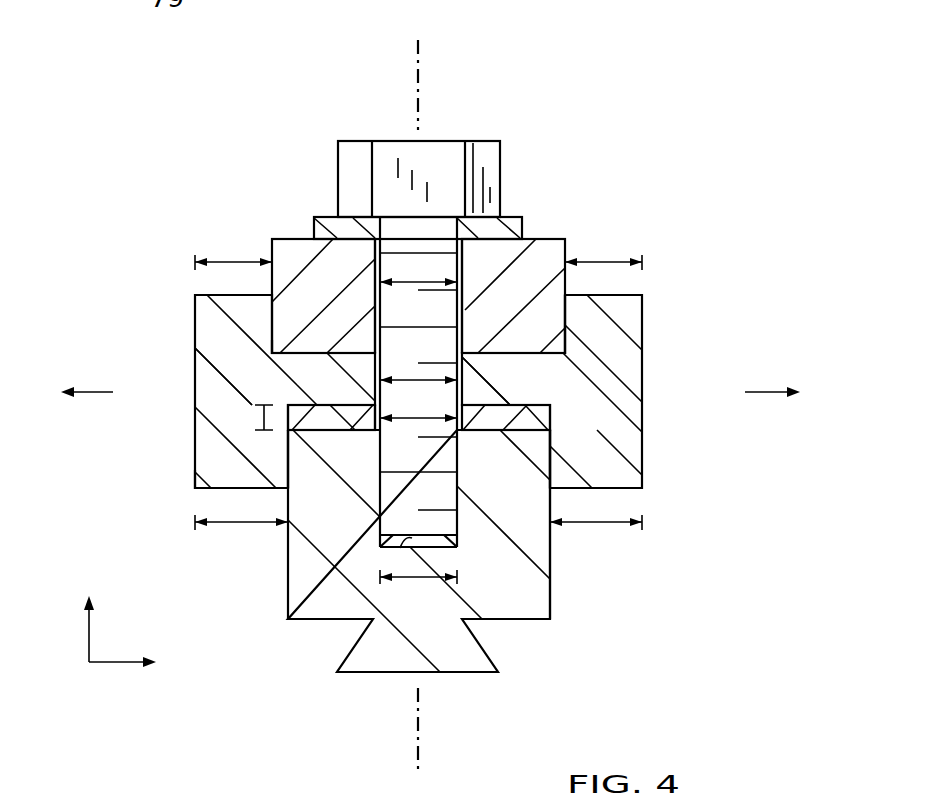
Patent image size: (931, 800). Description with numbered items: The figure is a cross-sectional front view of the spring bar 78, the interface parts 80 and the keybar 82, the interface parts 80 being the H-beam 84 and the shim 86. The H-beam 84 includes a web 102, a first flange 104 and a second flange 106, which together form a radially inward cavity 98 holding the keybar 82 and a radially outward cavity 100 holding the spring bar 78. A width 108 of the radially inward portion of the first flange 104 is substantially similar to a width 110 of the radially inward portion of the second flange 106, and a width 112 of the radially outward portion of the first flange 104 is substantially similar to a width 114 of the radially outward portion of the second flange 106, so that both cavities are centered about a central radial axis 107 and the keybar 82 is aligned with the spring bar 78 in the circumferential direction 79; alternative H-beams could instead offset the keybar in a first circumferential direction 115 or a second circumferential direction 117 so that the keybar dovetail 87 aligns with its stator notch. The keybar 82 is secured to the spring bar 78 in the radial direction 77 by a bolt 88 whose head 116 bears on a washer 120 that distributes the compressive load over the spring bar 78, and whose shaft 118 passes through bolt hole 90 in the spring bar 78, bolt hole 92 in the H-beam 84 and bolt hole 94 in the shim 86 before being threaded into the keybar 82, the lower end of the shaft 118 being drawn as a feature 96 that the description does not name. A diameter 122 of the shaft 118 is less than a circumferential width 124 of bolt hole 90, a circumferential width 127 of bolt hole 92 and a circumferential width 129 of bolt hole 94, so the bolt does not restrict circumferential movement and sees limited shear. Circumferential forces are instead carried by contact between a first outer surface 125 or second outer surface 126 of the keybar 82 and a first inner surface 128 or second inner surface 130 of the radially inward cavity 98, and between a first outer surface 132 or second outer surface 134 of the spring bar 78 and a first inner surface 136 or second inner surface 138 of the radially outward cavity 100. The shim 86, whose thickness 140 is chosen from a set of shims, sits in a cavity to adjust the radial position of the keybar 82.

The radial direction 77 is at (88, 658).
The spring bar 78 is at (560, 239).
The circumferential direction 79 is at (128, 665).
The interface parts 80 is at (118, 456).
The keybar 82 is at (407, 597).
The H-beam 84 is at (194, 490).
The shim 86 is at (306, 435).
The keybar dovetail 87 is at (398, 673).
The bolt 88 is at (418, 401).
The bolt hole in the spring bar 90 is at (465, 336).
The bolt hole in the H-beam 92 is at (419, 419).
The bolt hole in the shim 94 is at (384, 424).
The bolt shank end 96 is at (380, 549).
The radially inward cavity 98 is at (507, 474).
The radially outward cavity 100 is at (246, 423).
The web 102 is at (513, 383).
The first flange 104 is at (593, 407).
The second flange 106 is at (217, 380).
The central radial axis 107 is at (420, 52).
The width of the radially inward portion of the first flange 108 is at (612, 524).
The width of the radially inward portion of the second flange 110 is at (224, 524).
The width of the radially outward portion of the first flange 112 is at (610, 262).
The width of the radially outward portion of the second flange 114 is at (233, 260).
The first circumferential direction 115 is at (745, 392).
The head 116 is at (338, 180).
The second circumferential direction 117 is at (113, 392).
The shaft 118 is at (433, 518).
The washer 120 is at (314, 228).
The diameter of the shaft 122 is at (407, 580).
The circumferential width of the bolt hole in the spring bar 124 is at (379, 281).
The first outer surface of the keybar 125 is at (550, 497).
The second outer surface of the keybar 126 is at (288, 479).
The circumferential width of the bolt hole in the H-beam 127 is at (452, 446).
The first inner surface of the radially inward cavity 128 is at (550, 482).
The circumferential width of the bolt hole in the shim 129 is at (400, 547).
The second inner surface of the radially inward cavity 130 is at (288, 443).
The first outer surface of the spring bar 132 is at (563, 352).
The second outer surface of the spring bar 134 is at (272, 300).
The first inner surface of the radially outward cavity 136 is at (560, 330).
The second inner surface of the radially outward cavity 138 is at (273, 345).
The thickness of the shim 140 is at (256, 418).